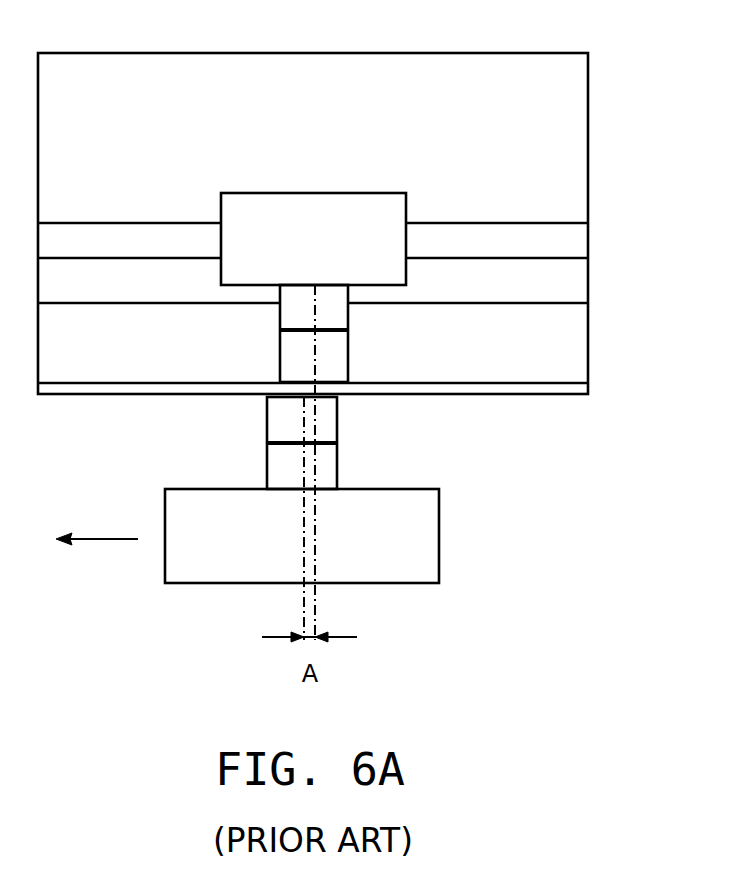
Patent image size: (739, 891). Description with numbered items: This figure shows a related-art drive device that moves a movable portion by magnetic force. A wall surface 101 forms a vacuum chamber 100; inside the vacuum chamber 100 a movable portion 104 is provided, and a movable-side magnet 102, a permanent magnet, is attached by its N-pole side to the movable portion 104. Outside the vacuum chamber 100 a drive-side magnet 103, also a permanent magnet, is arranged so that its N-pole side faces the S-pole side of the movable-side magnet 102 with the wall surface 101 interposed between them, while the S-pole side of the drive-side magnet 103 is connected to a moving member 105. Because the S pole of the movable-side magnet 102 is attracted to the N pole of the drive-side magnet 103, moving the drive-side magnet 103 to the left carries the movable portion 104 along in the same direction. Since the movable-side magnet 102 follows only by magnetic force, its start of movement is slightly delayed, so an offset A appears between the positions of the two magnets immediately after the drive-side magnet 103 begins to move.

The vacuum chamber 100 is at (270, 105).
The wall surface 101 is at (577, 396).
The movable-side magnet 102 is at (348, 343).
The drive-side magnet 103 is at (337, 427).
The movable portion 104 is at (381, 191).
The moving member 105 is at (173, 584).